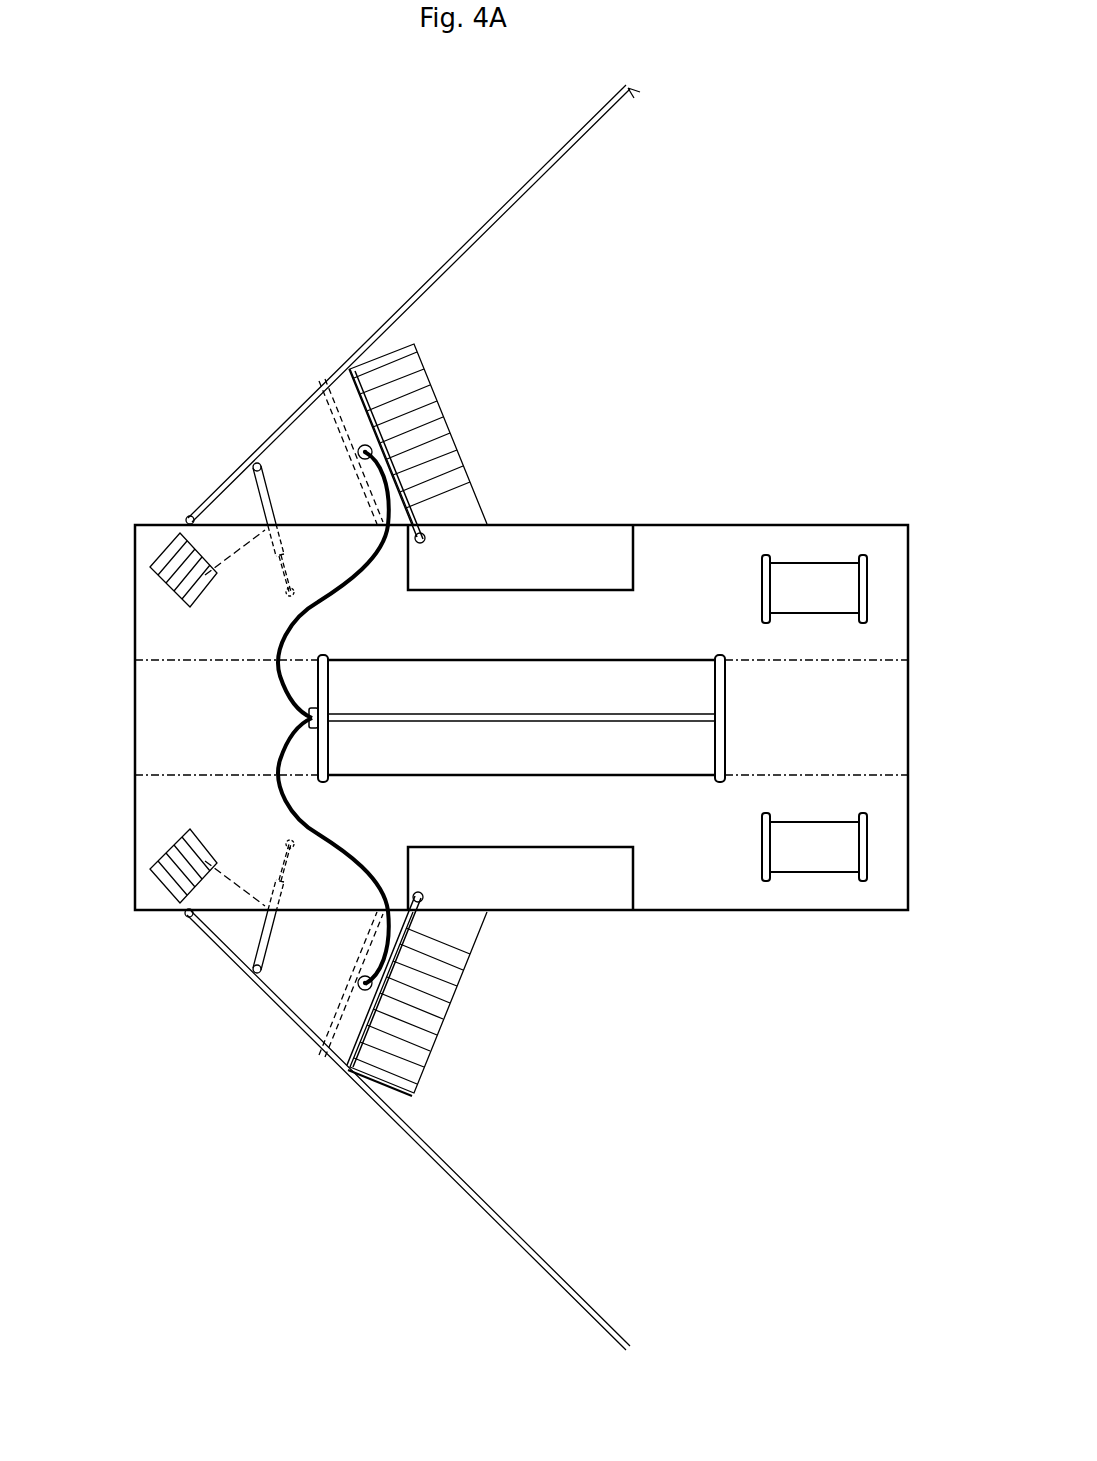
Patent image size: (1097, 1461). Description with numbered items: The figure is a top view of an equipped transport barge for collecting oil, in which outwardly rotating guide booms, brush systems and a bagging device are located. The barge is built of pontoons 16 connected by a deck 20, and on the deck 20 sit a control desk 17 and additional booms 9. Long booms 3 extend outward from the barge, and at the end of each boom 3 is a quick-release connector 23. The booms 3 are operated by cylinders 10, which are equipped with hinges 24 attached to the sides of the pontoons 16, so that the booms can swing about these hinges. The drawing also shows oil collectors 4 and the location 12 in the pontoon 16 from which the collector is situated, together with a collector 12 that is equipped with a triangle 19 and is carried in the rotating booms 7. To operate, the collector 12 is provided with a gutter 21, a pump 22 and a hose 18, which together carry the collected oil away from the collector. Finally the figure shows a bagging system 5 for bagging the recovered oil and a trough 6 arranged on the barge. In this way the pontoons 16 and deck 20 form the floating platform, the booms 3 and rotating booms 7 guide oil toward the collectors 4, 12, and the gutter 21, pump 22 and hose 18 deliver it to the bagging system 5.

The boom 3 is at (432, 283).
The oil collector 4 is at (185, 578).
The bagging system 5 is at (652, 743).
The trough 6 is at (565, 880).
The rotating boom 7 is at (342, 1038).
The additional boom 9 is at (812, 590).
The cylinder 10 is at (277, 527).
The collector 12 is at (430, 430).
The pontoon 16 is at (698, 560).
The control desk 17 is at (310, 718).
The hose 18 is at (270, 762).
The triangle 19 is at (400, 1100).
The deck 20 is at (850, 735).
The gutter 21 is at (357, 993).
The pump 22 is at (365, 983).
The quick-release connector 23 is at (628, 88).
The hinge 24 is at (190, 520).